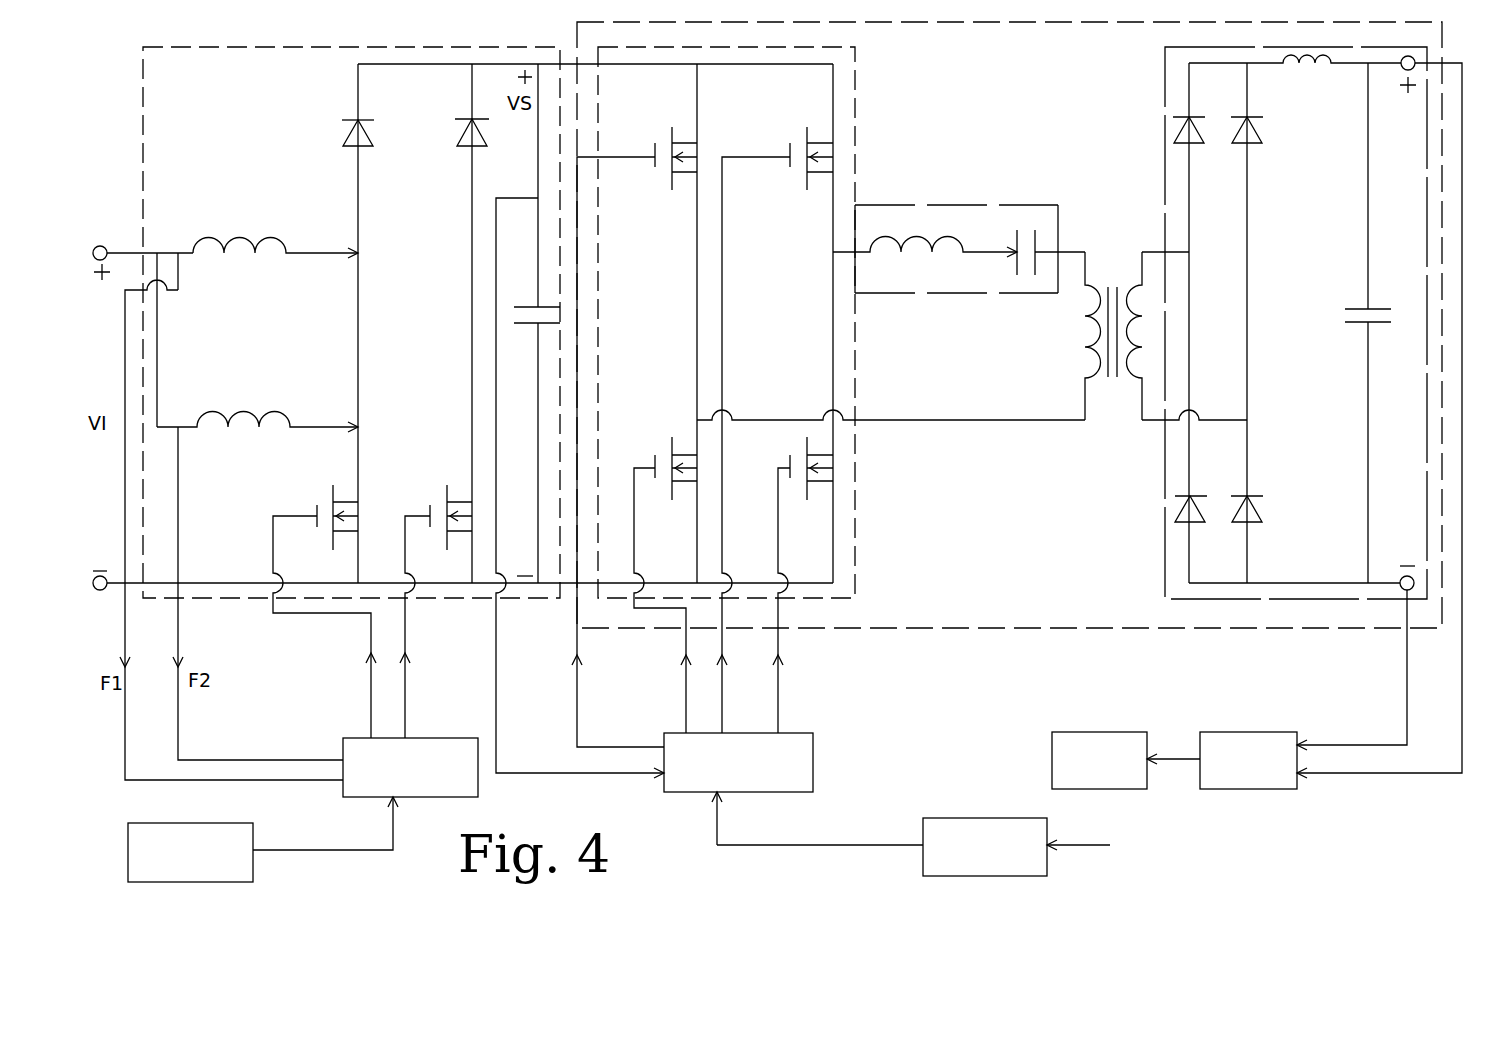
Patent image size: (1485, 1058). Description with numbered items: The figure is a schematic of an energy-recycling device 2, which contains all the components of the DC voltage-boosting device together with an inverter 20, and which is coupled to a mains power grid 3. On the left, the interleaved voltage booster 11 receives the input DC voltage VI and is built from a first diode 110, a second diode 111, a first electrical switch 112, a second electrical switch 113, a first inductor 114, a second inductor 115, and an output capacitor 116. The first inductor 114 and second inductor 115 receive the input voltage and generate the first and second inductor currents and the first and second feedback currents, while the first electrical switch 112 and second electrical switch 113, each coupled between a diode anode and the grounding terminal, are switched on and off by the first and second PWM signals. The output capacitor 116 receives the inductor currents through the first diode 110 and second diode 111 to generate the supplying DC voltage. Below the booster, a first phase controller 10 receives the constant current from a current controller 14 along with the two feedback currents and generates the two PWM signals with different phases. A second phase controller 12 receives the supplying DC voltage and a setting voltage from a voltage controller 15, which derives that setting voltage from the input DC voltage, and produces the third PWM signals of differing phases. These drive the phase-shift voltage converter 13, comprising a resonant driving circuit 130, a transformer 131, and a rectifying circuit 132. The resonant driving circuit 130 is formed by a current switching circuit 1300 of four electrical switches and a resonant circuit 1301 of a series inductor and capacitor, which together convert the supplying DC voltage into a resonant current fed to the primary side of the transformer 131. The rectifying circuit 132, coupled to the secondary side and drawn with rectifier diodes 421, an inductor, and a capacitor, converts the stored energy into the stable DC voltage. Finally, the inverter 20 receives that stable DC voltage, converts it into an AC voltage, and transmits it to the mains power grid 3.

The energy-recycling device 2 is at (1285, 866).
The mains power grid 3 is at (1093, 732).
The first phase controller 10 is at (478, 797).
The interleaved voltage booster 11 is at (478, 603).
The second phase controller 12 is at (813, 792).
The phase-shift voltage converter 13 is at (1165, 628).
The current controller 14 is at (253, 823).
The voltage controller 15 is at (962, 818).
The inverter 20 is at (1240, 732).
The first diode 110 is at (342, 120).
The second diode 111 is at (455, 119).
The first electrical switch 112 is at (317, 505).
The second electrical switch 113 is at (440, 495).
The first inductor 114 is at (242, 238).
The second inductor 115 is at (250, 410).
The output capacitor 116 is at (538, 330).
The resonant driving circuit 130 is at (1040, 598).
The current switching circuit 1300 is at (857, 504).
The resonant circuit 1301 is at (1028, 205).
The transformer 131 is at (1113, 283).
The rectifying circuit 132 is at (1278, 412).
The rectifier diodes 421 is at (1165, 497).